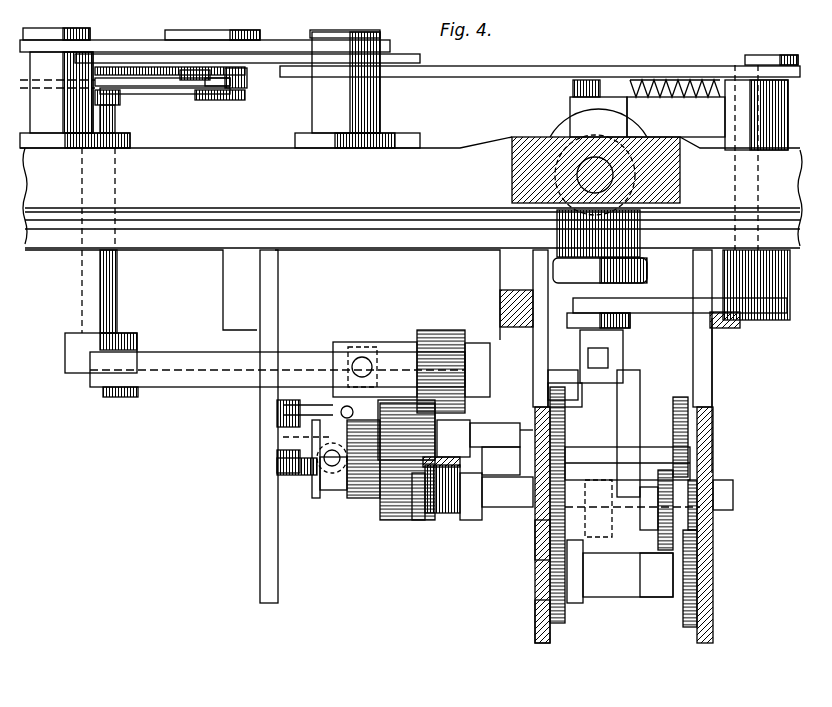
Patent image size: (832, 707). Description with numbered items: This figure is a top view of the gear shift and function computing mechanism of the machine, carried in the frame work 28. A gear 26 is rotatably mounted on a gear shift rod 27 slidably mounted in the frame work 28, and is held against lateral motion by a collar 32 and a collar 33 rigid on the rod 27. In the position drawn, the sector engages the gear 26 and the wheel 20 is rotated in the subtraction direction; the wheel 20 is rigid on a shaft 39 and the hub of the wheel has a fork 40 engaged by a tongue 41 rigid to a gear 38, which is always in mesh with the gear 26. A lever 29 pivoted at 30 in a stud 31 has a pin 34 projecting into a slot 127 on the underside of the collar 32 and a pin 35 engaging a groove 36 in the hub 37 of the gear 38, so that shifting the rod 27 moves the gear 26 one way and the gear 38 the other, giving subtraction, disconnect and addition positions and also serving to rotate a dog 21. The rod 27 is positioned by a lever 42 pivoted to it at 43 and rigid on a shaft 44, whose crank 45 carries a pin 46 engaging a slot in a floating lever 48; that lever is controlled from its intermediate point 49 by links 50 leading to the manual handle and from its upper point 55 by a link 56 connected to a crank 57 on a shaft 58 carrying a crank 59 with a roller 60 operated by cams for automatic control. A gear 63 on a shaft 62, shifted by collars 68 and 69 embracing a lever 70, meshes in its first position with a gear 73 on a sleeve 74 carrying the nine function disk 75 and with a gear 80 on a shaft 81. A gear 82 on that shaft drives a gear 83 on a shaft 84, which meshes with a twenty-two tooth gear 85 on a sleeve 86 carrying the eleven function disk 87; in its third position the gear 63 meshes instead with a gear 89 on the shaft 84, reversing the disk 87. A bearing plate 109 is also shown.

The wheel 20 is at (603, 540).
The dog 21 is at (600, 357).
The gear 26 is at (440, 340).
The gear shift rod 27 is at (200, 355).
The frame work 28 is at (380, 248).
The lever 29 is at (283, 437).
The pivot 30 is at (283, 415).
The stud 31 is at (283, 405).
The collar 32 is at (400, 345).
The collar 33 is at (478, 345).
The pin 34 is at (352, 350).
The pin 35 is at (313, 495).
The groove 36 is at (330, 492).
The hub 37 is at (367, 492).
The gear 38 is at (405, 520).
The shaft 39 is at (292, 470).
The fork 40 is at (500, 465).
The tongue 41 is at (465, 455).
The lever 42 is at (75, 375).
The pivot 43 is at (115, 397).
The shaft 44 is at (117, 297).
The crank 45 is at (195, 80).
The pin 46 is at (185, 80).
The floating lever 48 is at (265, 62).
The intermediate point 49 is at (222, 86).
The links 50 is at (110, 35).
The upper point 55 is at (262, 32).
The link 56 is at (560, 66).
The crank 57 is at (740, 95).
The shaft 58 is at (680, 185).
The crank 59 is at (670, 298).
The roller 60 is at (628, 320).
The shaft 62 is at (515, 510).
The gear 63 is at (690, 470).
The collar 68 is at (466, 520).
The collar 69 is at (428, 520).
The lever 70 is at (445, 513).
The gear 73 is at (688, 397).
The sleeve 74 is at (655, 413).
The 9 function disk 75 is at (632, 423).
The gear 80 is at (690, 627).
The shaft 81 is at (648, 597).
The gear 82 is at (560, 623).
The gear 83 is at (553, 537).
The shaft 84 is at (625, 600).
The gear 85 is at (495, 507).
The sleeve 86 is at (548, 380).
The 11 function disk 87 is at (577, 400).
The gear 89 is at (700, 525).
The bearing plate 109 is at (713, 592).
The slot 127 is at (362, 345).